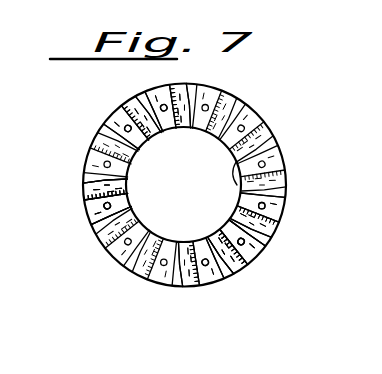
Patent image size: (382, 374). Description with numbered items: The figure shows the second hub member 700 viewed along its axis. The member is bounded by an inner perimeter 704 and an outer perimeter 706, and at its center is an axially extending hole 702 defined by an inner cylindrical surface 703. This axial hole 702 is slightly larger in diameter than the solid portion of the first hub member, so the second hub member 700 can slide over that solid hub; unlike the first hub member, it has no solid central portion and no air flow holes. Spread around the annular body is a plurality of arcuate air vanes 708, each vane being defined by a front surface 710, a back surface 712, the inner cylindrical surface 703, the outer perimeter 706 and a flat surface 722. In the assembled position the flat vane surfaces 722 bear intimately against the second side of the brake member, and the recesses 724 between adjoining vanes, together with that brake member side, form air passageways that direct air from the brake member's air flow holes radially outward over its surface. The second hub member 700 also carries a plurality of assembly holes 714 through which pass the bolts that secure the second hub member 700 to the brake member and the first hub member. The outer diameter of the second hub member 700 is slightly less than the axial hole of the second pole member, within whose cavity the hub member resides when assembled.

The second hub member 700 is at (277, 116).
The axially extending hole 702 is at (197, 170).
The inner cylindrical surface 703 is at (240, 150).
The inner perimeter 704 is at (247, 217).
The outer perimeter 706 is at (256, 253).
The arcuate air vanes 708 is at (112, 102).
The front surface 710 is at (113, 217).
The back surface 712 is at (92, 187).
The assembly holes 714 is at (213, 97).
The flat vane surfaces 722 is at (169, 97).
The recesses 724 is at (190, 98).